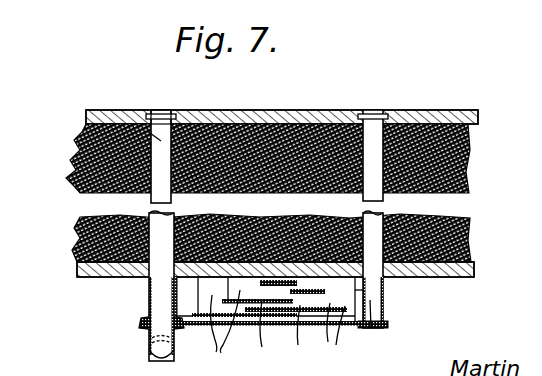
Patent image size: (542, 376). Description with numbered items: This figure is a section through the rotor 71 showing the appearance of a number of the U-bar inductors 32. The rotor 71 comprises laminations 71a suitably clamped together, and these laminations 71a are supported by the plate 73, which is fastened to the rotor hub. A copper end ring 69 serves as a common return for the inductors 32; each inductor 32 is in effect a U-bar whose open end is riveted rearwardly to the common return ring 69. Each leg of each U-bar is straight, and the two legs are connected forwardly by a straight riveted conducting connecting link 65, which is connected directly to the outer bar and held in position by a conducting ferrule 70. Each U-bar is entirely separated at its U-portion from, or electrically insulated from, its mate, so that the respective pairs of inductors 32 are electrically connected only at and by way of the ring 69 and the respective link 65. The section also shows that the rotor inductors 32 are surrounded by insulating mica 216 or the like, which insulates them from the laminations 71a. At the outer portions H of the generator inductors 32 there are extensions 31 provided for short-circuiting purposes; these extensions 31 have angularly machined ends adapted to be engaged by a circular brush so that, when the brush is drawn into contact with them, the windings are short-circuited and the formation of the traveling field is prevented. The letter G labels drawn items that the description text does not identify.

The outer portion of inductor H is at (139, 111).
The laminations 71a is at (205, 111).
The copper end ring 69 is at (299, 110).
The insulating mica 216 is at (84, 140).
The inductor 32 is at (160, 285).
The conducting ferrule 70 is at (146, 319).
The extension 31 is at (149, 348).
The conductor wires G is at (274, 329).
The conducting connecting link 65 is at (262, 305).
The rotor 71 is at (393, 302).
The plate 73 is at (441, 271).